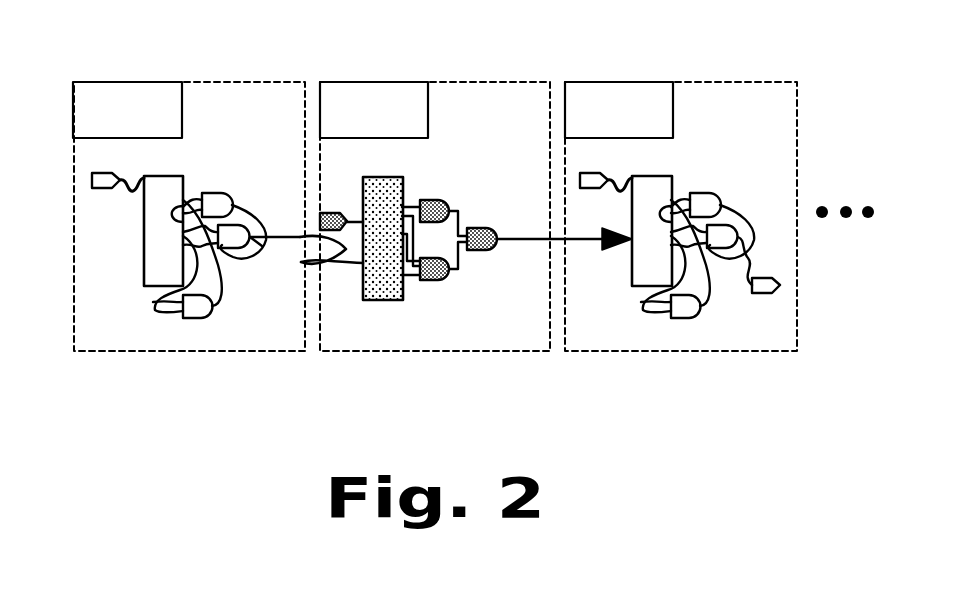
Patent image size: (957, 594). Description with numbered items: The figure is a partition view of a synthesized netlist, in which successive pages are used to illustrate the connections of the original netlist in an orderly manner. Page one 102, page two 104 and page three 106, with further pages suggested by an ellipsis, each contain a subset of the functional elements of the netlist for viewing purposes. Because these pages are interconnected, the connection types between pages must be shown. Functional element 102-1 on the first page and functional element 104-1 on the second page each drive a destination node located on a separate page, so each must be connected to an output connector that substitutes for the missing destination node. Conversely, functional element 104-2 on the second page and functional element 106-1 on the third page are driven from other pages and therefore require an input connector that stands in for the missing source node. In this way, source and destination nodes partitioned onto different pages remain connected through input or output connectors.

The page 1 102 is at (187, 82).
The functional element 102-1 is at (257, 249).
The page 2 104 is at (448, 82).
The functional element 104-1 is at (492, 227).
The functional element 104-2 is at (403, 300).
The page 3 106 is at (693, 82).
The functional element 106-1 is at (637, 287).